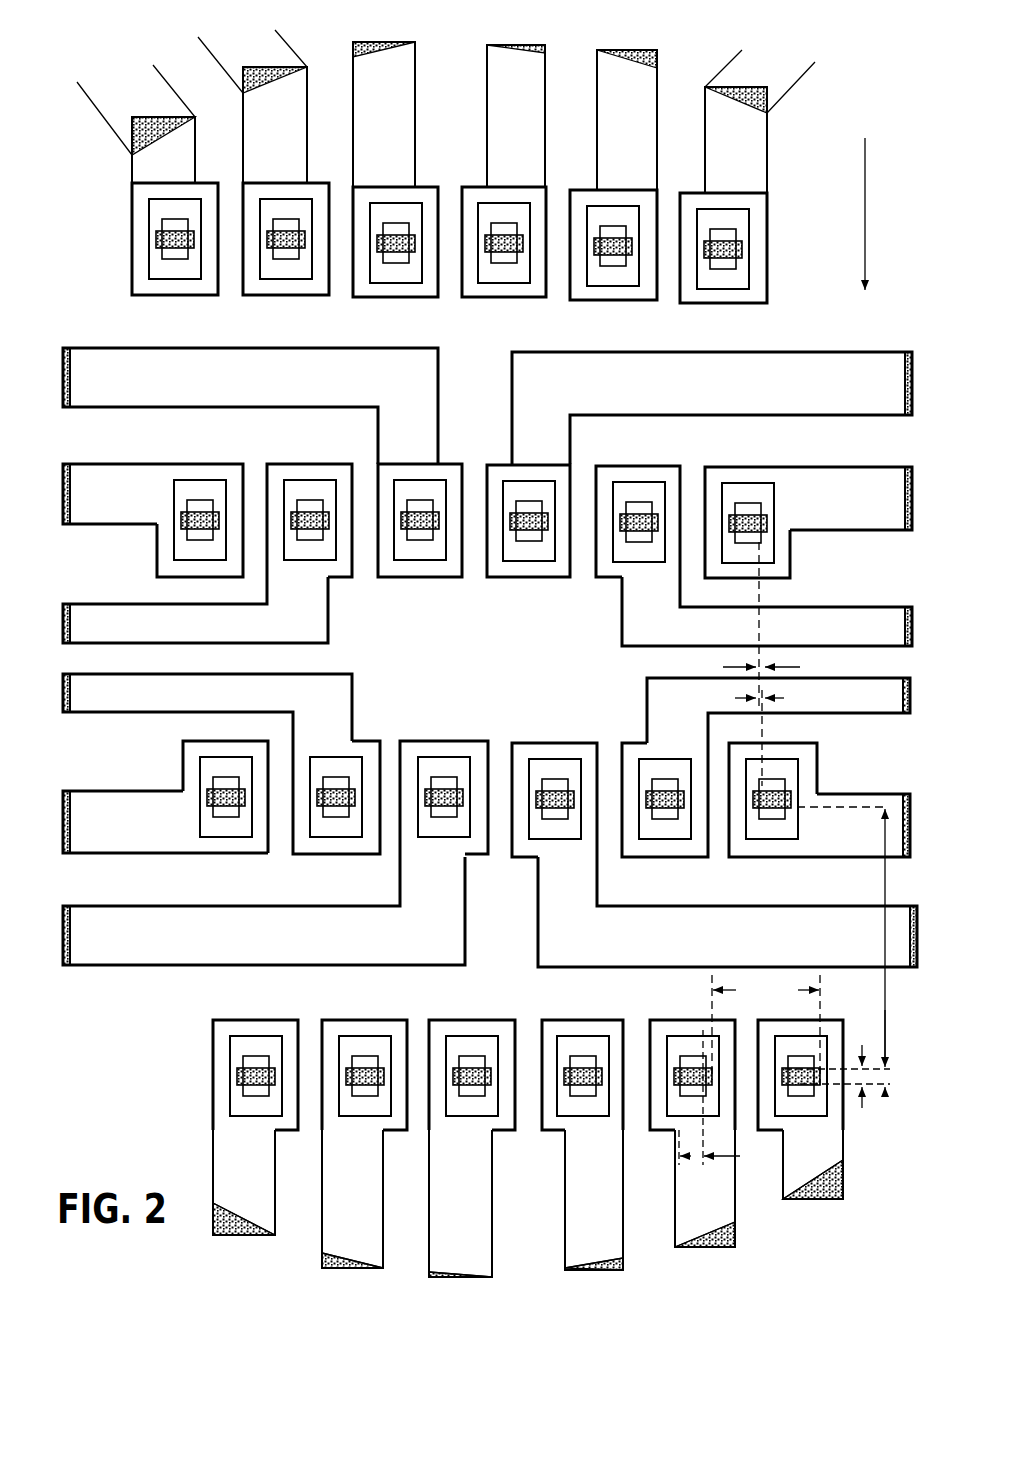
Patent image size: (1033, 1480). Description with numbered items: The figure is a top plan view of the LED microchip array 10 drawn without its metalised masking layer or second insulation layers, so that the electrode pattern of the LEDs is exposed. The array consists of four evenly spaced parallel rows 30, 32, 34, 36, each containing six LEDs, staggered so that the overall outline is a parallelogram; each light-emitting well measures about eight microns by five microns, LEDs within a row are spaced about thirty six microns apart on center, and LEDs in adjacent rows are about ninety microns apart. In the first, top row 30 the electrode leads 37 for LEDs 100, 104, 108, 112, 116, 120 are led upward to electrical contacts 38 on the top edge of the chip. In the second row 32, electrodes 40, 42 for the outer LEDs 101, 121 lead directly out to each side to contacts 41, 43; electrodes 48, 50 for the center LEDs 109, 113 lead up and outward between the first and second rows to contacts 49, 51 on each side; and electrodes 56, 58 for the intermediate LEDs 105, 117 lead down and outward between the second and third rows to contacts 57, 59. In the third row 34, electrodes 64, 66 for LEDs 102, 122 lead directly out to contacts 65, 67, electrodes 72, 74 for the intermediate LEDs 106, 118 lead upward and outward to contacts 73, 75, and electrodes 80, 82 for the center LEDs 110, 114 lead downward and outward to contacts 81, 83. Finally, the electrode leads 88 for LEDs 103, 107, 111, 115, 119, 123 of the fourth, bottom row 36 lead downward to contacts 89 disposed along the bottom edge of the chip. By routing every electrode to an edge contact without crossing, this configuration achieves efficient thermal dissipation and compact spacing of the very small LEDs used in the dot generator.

The LED microchip array 10 is at (574, 44).
The first row 30 is at (122, 263).
The second row 32 is at (143, 536).
The third row 34 is at (170, 763).
The fourth row 36 is at (205, 1075).
The electrode leads 37 is at (243, 143).
The electrical contacts 38 is at (243, 70).
The electrode 40 is at (116, 446).
The contact 41 is at (68, 446).
The electrode 42 is at (838, 466).
The contact 43 is at (910, 467).
The electrode 48 is at (368, 351).
The contact 49 is at (65, 348).
The electrode 50 is at (697, 353).
The contact 51 is at (911, 352).
The electrode 56 is at (153, 604).
The contact 57 is at (60, 590).
The electrode 58 is at (688, 607).
The contact 59 is at (910, 607).
The electrode 64 is at (97, 855).
The contact 65 is at (94, 772).
The electrode 66 is at (838, 857).
The contact 67 is at (906, 857).
The electrode 72 is at (250, 674).
The contact 73 is at (65, 674).
The electrode 74 is at (664, 678).
The contact 75 is at (909, 678).
The electrode 80 is at (350, 967).
The contact 81 is at (65, 965).
The electrode 82 is at (652, 969).
The contact 83 is at (922, 898).
The electrode leads 88 is at (322, 1211).
The contacts 89 is at (322, 1266).
The LED 100 is at (177, 251).
The LED 101 is at (202, 532).
The LED 102 is at (218, 810).
The LED 103 is at (260, 1086).
The LED 104 is at (288, 251).
The LED 105 is at (312, 532).
The LED 106 is at (328, 810).
The LED 107 is at (370, 1086).
The LED 108 is at (398, 255).
The LED 109 is at (422, 532).
The LED 110 is at (446, 808).
The LED 111 is at (476, 1086).
The LED 112 is at (506, 255).
The LED 113 is at (530, 533).
The LED 114 is at (552, 812).
The LED 115 is at (584, 1086).
The LED 116 is at (615, 258).
The LED 117 is at (640, 534).
The LED 118 is at (673, 808).
The LED 119 is at (690, 1088).
The LED 120 is at (725, 261).
The LED 121 is at (752, 535).
The LED 122 is at (782, 786).
The LED 123 is at (808, 1086).